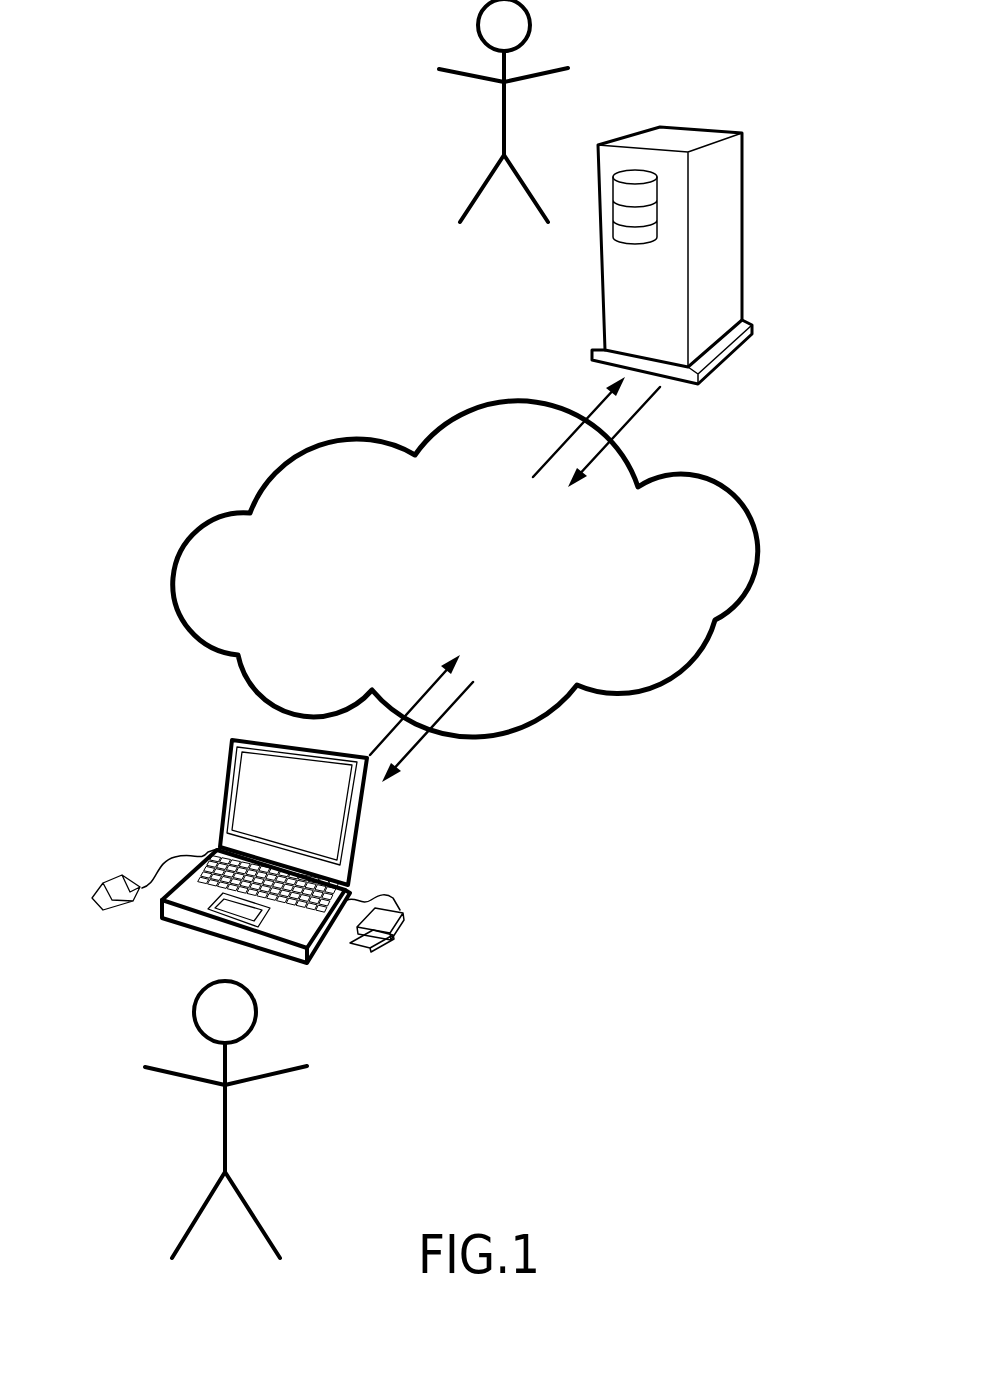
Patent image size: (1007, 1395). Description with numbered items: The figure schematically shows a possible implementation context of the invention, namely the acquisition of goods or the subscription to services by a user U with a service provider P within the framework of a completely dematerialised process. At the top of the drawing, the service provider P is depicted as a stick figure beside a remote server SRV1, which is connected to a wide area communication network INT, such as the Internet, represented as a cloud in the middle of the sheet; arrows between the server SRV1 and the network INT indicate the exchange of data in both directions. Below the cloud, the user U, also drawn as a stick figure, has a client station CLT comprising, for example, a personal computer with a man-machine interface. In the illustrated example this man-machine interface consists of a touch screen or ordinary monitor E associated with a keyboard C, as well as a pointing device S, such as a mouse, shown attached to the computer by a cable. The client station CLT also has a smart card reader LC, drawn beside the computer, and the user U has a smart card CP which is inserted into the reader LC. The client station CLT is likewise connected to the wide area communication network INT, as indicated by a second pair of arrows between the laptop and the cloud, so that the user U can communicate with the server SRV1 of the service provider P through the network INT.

The service provider P is at (552, 44).
The remote server SRV1 is at (718, 230).
The wide area communication network INT is at (755, 568).
The client station CLT is at (276, 853).
The screen E is at (325, 816).
The keyboard C is at (228, 864).
The pointing device S is at (110, 890).
The smart card reader LC is at (402, 918).
The smart card CP is at (385, 940).
The user U is at (285, 1106).